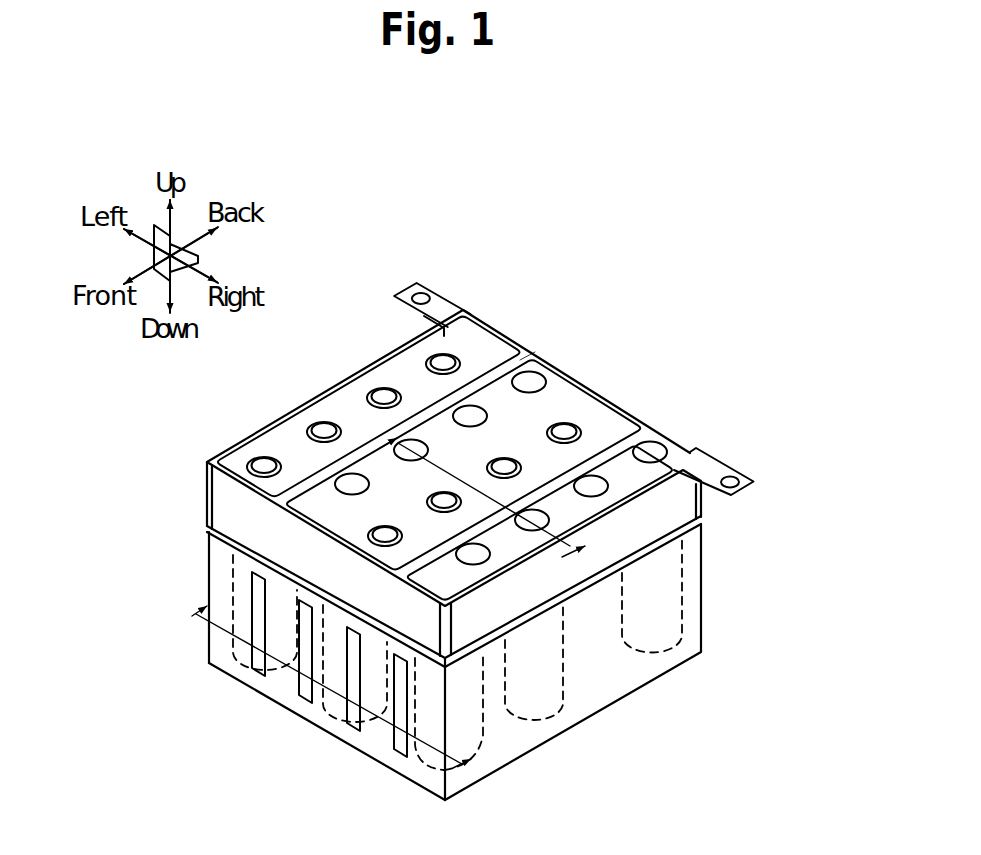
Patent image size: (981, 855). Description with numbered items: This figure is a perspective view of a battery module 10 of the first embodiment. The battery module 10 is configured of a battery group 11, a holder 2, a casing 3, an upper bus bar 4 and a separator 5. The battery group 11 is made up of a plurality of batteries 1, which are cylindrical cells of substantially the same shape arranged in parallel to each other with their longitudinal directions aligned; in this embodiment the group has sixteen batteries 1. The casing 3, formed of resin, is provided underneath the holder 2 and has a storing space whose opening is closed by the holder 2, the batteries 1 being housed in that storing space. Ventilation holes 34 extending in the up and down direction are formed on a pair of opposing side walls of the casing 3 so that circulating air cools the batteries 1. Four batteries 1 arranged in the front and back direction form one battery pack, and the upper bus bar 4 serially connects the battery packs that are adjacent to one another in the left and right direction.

The battery 1 is at (240, 591).
The holder 2 is at (220, 500).
The casing 3 is at (478, 749).
The upper bus bar 4 is at (466, 325).
The separator 5 is at (533, 346).
The battery module 10 is at (686, 412).
The battery group 11 is at (674, 601).
The ventilation hole 34 is at (345, 719).